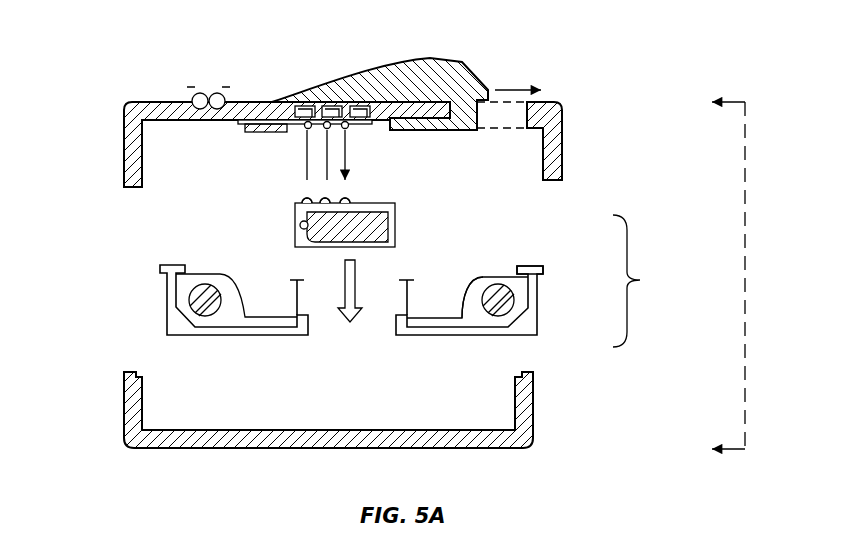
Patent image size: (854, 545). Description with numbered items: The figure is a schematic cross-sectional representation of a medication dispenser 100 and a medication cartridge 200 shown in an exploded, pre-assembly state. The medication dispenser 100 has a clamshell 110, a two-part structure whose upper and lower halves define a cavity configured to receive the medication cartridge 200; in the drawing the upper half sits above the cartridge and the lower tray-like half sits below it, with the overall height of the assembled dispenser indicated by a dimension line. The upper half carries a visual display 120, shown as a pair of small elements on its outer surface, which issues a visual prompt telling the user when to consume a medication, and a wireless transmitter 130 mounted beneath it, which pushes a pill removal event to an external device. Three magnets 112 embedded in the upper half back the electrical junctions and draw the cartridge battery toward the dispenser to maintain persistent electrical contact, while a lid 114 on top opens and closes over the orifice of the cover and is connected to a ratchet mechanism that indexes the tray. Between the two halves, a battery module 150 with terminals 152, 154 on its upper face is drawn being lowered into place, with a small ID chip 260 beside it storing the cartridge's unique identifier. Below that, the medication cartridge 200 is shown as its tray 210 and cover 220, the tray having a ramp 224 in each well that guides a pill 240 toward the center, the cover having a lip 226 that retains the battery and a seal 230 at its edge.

The medication dispenser 100 is at (757, 275).
The clamshell 110 is at (128, 156).
The magnet 112 is at (331, 106).
The lid 114 is at (448, 86).
The visual display 120 is at (204, 94).
The wireless transmitter 130 is at (263, 122).
The module 150 is at (396, 227).
The contact 152 is at (346, 201).
The contact 154 is at (326, 200).
The medication cartridge 200 is at (391, 280).
The tray 210 is at (504, 274).
The cover 220 is at (496, 276).
The ramp 224 is at (201, 290).
The lip 226 is at (293, 286).
The seal 230 is at (534, 267).
The pill 240 is at (514, 299).
The ID chip 260 is at (300, 225).